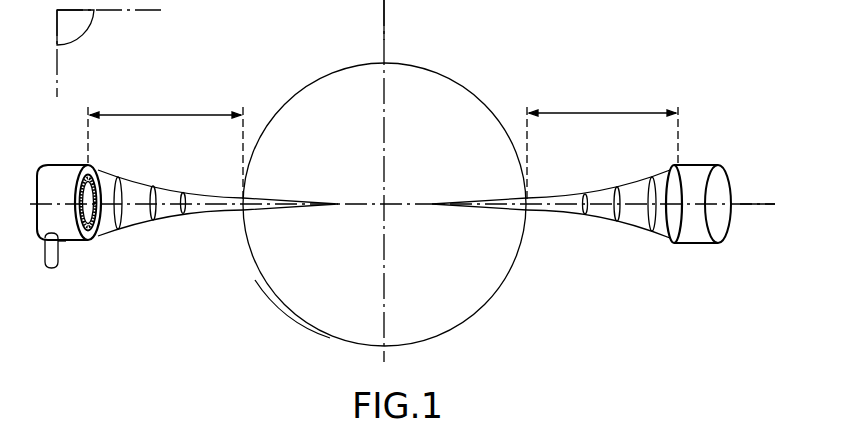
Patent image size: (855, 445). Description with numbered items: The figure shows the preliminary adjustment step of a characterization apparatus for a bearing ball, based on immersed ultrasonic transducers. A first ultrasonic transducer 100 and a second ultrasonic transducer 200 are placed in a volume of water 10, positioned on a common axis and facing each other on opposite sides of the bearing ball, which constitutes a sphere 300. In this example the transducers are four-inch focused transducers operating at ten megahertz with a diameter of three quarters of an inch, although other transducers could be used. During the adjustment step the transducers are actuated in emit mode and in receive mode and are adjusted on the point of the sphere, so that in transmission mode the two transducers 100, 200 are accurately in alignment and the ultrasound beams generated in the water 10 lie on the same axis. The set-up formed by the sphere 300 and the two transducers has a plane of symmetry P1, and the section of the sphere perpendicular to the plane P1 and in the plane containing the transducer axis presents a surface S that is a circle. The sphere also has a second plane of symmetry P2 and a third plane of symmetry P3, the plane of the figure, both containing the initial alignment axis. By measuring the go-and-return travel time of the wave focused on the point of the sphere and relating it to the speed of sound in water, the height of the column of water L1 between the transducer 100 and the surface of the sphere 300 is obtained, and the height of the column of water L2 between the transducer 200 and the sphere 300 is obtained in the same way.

The volume of water 10 is at (585, 324).
The first ultrasonic transducer 100 is at (62, 165).
The second ultrasonic transducer 200 is at (707, 165).
The sphere 300 is at (455, 88).
The surface S is at (285, 310).
The plane of symmetry P1 is at (386, 20).
The second plane of symmetry P2 is at (751, 205).
The third plane of symmetry P3 is at (111, 53).
The height of the column of water L1 is at (165, 148).
The height of the column of water L2 is at (602, 148).